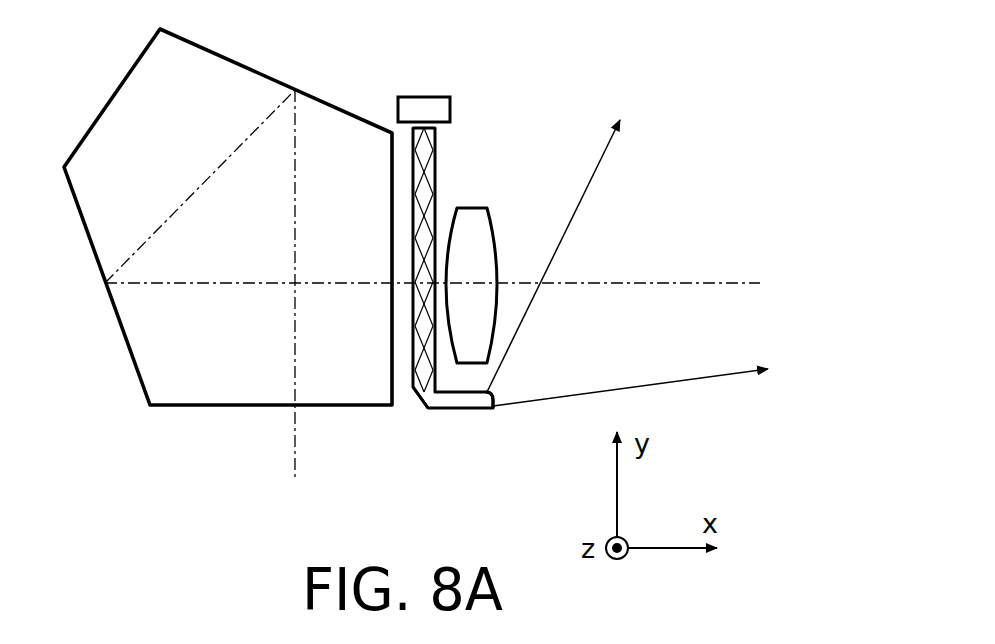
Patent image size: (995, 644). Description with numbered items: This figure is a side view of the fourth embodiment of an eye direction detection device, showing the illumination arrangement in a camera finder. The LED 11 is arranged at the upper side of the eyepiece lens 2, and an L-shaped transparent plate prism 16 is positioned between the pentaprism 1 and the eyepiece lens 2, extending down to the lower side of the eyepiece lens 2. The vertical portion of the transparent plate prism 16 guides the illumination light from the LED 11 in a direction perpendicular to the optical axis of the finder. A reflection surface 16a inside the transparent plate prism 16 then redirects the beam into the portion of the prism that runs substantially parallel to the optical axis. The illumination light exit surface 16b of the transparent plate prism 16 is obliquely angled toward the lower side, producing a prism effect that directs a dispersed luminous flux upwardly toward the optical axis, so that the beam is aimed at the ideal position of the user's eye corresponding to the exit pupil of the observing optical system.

The pentaprism 1 is at (248, 67).
The eyepiece lens 2 is at (470, 203).
The LED 11 is at (422, 97).
The transparent plate prism 16 is at (455, 412).
The reflection surface 16a is at (420, 397).
The illumination light exit surface 16b is at (493, 398).